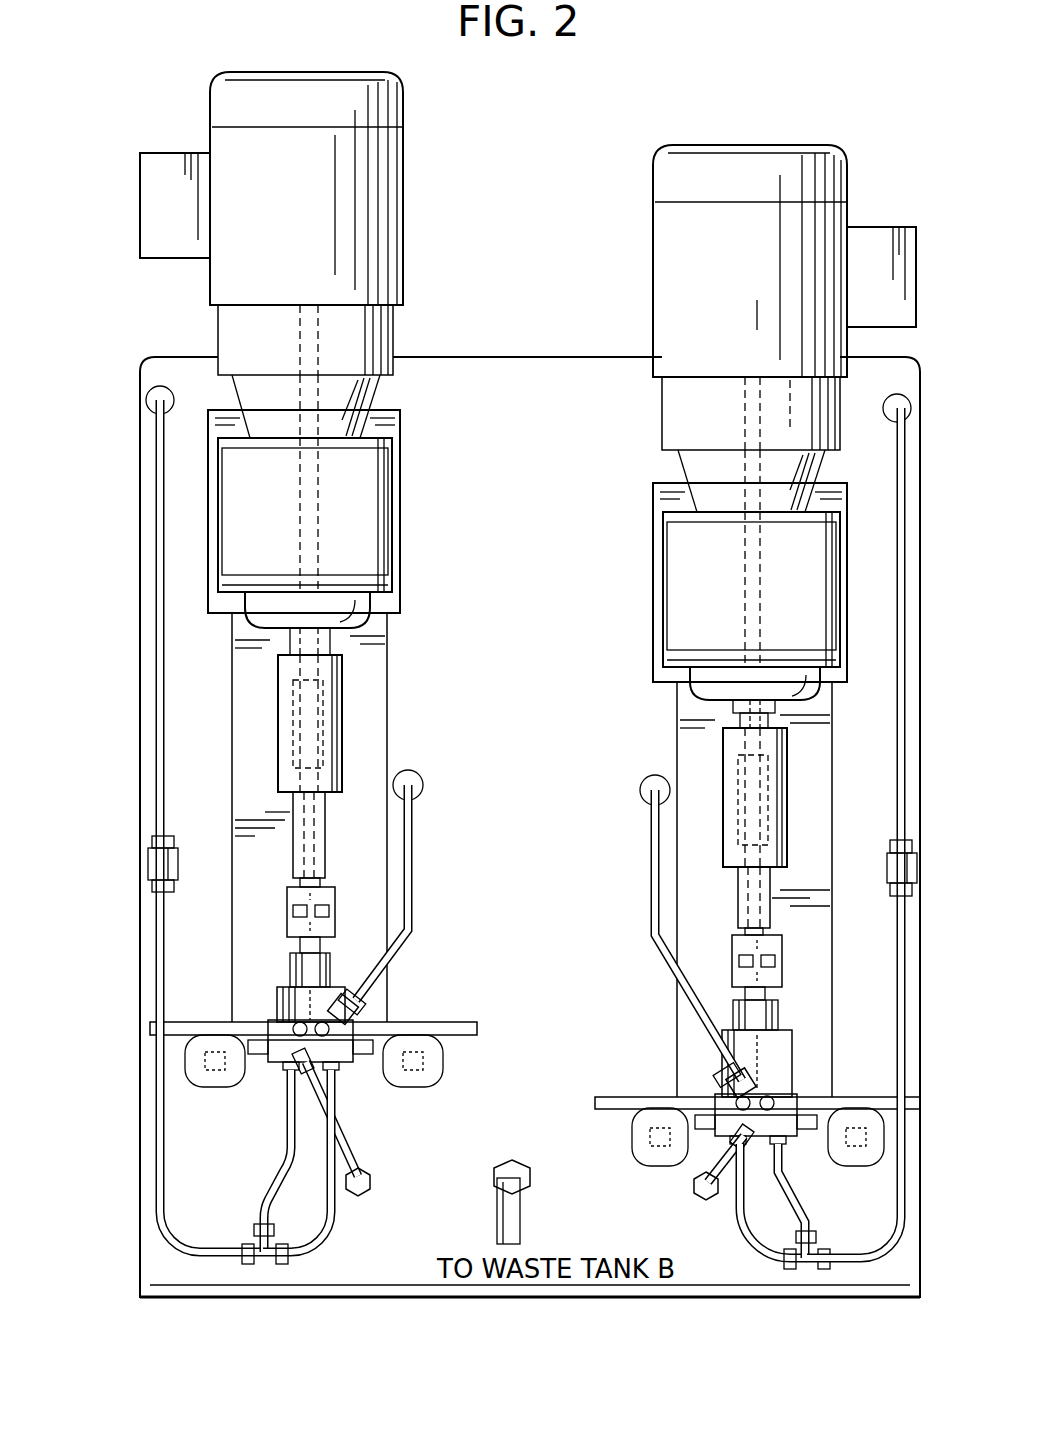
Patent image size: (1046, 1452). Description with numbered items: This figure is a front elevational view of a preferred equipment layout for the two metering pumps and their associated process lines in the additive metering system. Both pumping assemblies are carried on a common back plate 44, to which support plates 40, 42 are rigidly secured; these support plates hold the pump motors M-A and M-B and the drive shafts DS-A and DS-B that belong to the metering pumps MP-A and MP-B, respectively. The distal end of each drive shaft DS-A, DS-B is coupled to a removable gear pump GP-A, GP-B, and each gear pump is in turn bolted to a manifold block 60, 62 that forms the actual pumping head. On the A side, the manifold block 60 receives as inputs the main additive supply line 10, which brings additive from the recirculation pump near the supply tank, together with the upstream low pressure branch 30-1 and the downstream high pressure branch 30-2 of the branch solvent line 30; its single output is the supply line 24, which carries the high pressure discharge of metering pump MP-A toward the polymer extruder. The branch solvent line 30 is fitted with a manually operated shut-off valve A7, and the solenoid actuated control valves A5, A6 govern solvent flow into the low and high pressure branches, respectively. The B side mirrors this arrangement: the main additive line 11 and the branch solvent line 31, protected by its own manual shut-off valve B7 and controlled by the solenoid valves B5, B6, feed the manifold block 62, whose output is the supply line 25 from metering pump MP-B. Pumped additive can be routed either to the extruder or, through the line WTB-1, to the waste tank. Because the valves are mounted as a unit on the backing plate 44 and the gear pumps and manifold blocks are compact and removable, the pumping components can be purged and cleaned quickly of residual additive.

The pump motor M-A is at (318, 238).
The pump motor M-B is at (770, 304).
The back plate 44 is at (497, 595).
The metering pump MP-A is at (352, 708).
The metering pump MP-B is at (658, 657).
The drive shaft DS-A is at (328, 808).
The drive shaft DS-B is at (745, 715).
The support plate 40 is at (368, 849).
The support plate 42 is at (720, 909).
The branch solvent line 30 is at (156, 705).
The branch solvent line 31 is at (905, 692).
The main additive supply line 10 is at (416, 870).
The main additive supply line 11 is at (650, 885).
The manually operated shut-off valve A7 is at (150, 864).
The manually operated shut-off valve B7 is at (889, 868).
The removable gear pump GP-A is at (300, 1000).
The removable gear pump GP-B is at (795, 1040).
The manifold block 60 is at (285, 1008).
The manifold block 62 is at (792, 1040).
The solenoid actuated control valve A5 is at (200, 1080).
The solenoid actuated control valve A6 is at (430, 1085).
The solenoid actuated control valve B5 is at (634, 1136).
The solenoid actuated control valve B6 is at (868, 1162).
The supply line 24 is at (360, 1158).
The supply line 25 is at (692, 1183).
The upstream low pressure branch 30-1 is at (286, 1152).
The downstream high pressure branch 30-2 is at (326, 1238).
The waste tank line WTB-1 is at (520, 1205).